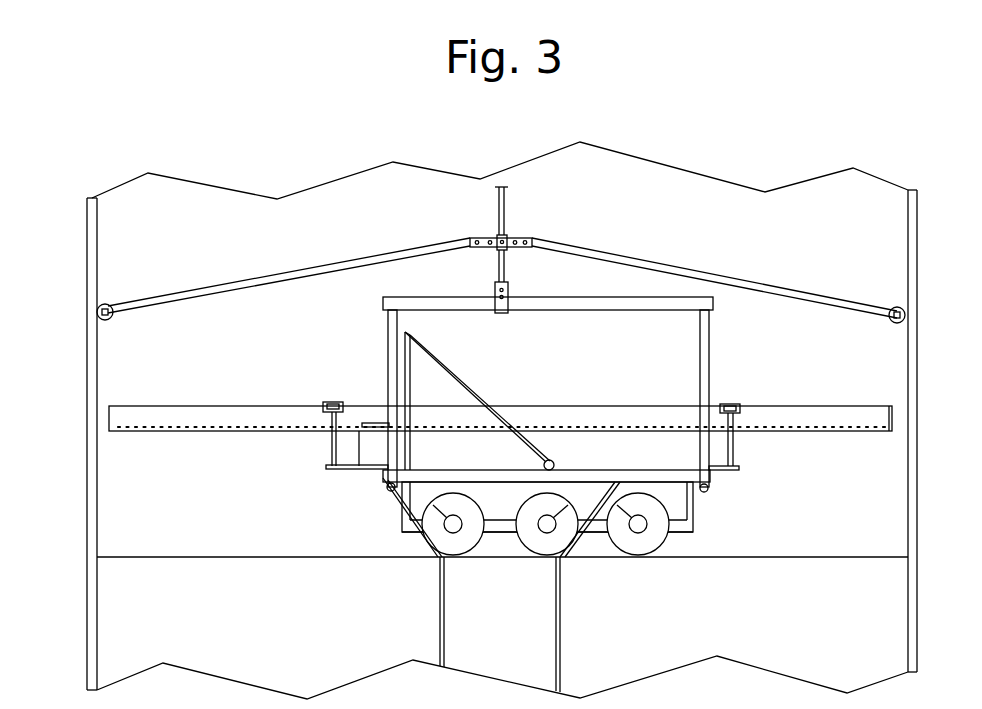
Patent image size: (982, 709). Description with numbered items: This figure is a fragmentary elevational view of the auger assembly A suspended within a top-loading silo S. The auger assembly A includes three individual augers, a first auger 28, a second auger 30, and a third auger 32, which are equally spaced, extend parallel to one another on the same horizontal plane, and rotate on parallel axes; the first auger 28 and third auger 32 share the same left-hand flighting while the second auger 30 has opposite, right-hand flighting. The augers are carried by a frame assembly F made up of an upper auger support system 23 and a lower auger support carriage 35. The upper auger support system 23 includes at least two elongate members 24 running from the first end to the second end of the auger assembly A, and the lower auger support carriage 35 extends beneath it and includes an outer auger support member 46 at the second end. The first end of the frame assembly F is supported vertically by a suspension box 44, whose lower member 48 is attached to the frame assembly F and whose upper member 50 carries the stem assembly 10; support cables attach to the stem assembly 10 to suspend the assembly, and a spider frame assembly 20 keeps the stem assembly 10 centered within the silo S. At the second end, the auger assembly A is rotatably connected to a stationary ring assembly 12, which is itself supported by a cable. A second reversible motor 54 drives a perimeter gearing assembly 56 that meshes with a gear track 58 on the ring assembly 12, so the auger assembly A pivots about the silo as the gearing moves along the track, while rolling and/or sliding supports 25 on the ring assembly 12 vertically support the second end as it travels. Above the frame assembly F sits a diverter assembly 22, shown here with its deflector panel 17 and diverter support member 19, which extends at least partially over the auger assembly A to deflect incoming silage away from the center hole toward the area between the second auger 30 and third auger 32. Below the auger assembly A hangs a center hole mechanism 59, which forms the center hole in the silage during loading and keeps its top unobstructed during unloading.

The stem assembly 10 is at (505, 205).
The spider frame assembly 20 is at (768, 284).
The suspension box upper member 50 is at (638, 300).
The suspension box 44 is at (710, 362).
The diverter assembly 22 is at (522, 385).
The suspension box lower member 48 is at (420, 470).
The diverter support member 19 is at (410, 386).
The deflector panel 17 is at (452, 371).
The elongate members 24 is at (556, 465).
The ring assembly 12 is at (168, 405).
The gear track 58 is at (257, 430).
The rolling and/or sliding supports 25 is at (325, 414).
The perimeter gearing assembly 56 is at (374, 423).
The second reversible motor 54 is at (365, 453).
The upper auger support system 23 is at (362, 476).
The frame assembly F is at (358, 505).
The lower auger support carriage 35 is at (718, 512).
The outer auger support member 46 is at (695, 532).
The third auger 32 is at (655, 552).
The first auger 28 is at (434, 559).
The second auger 30 is at (566, 559).
The center hole mechanism 59 is at (446, 630).
The auger assembly A is at (832, 483).
The silo S is at (62, 262).